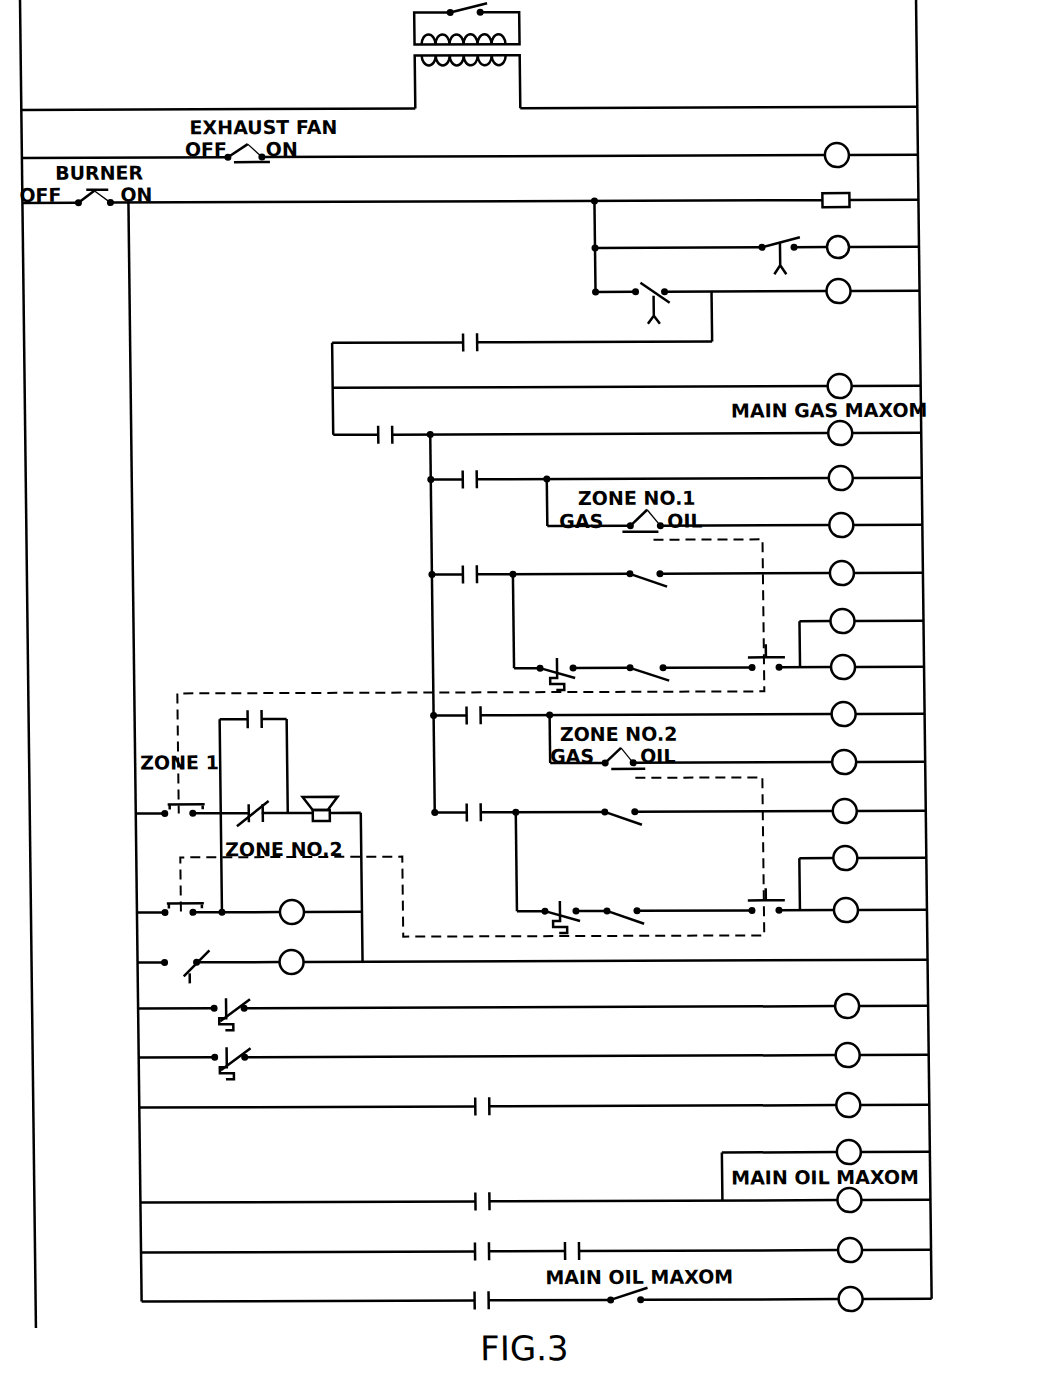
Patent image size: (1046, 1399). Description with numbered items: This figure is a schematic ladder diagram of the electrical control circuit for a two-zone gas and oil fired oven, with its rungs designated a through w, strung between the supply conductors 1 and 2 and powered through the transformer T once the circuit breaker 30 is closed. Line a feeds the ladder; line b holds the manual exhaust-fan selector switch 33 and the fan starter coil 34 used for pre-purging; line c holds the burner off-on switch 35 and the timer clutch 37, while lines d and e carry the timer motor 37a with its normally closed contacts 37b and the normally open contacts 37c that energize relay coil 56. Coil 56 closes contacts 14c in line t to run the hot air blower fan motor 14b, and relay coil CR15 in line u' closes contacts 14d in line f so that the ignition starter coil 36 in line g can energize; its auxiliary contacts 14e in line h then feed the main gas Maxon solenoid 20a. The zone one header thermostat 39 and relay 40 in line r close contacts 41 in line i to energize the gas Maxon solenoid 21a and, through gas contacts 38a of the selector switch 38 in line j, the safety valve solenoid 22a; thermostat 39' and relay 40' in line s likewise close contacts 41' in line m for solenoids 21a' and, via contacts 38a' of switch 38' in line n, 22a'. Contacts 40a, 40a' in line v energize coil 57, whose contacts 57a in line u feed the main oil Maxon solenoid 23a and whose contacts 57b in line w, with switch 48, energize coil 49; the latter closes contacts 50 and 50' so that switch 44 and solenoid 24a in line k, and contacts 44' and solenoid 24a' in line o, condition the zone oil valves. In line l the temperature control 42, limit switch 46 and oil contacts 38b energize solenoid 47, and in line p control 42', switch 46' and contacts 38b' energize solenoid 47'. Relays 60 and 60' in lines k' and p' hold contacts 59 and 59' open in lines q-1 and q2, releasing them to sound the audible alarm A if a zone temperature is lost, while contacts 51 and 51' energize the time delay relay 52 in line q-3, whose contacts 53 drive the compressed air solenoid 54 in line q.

The oven chamber 1 is at (20, 32).
The power supply line 2 is at (916, 14).
The circuit breaker 30 is at (420, 8).
The power transmitting transformer T is at (519, 58).
The off-on selector switch 33 is at (246, 165).
The starter coil 34 is at (844, 150).
The burner off-on switch 35 is at (90, 208).
The coil operated timer clutch 37 is at (846, 198).
The timer motor 37a is at (845, 242).
The normally closed timer contacts 37b is at (776, 246).
The normally open timer contacts 37c is at (650, 291).
The relay coil 56 is at (844, 286).
The relay contacts 14d is at (466, 328).
The ignition starter coil 36 is at (844, 381).
The main gas Maxon solenoid coil 20a is at (842, 446).
The ignition auxiliary contacts 14e is at (380, 432).
The relay contacts 41 is at (458, 464).
The zone gas Maxon valve solenoid 21a is at (869, 473).
The zone fuel selector switch 38 is at (584, 526).
The gas contacts 38a is at (614, 553).
The safety gas valve solenoid 22a is at (868, 519).
The relay contacts 50 is at (458, 559).
The zone oil Maxon valve solenoid 24a is at (869, 566).
The switch 44 is at (629, 593).
The relay 60 is at (864, 614).
The limit switch 46 is at (647, 656).
The oil contacts 38b is at (748, 640).
The solenoid 47 is at (865, 659).
The zone temperature activated control 42 is at (518, 674).
The zone two gas Maxon valve solenoid 21a' is at (872, 708).
The normally closed contacts 59 is at (261, 805).
The circuit line q-1 is at (279, 748).
The relay contacts 41' is at (458, 735).
The zone two selector switch 38' is at (588, 772).
The zone two safety gas valve solenoid 22a' is at (872, 755).
The normally closed contacts 59' is at (249, 797).
The audible alarm A is at (316, 797).
The circuit line q2 is at (330, 812).
The selector switch contacts 51 is at (187, 796).
The gas contacts 38a' is at (654, 792).
The zone two oil Maxon valve solenoid 24a' is at (872, 803).
The relay contacts 50' is at (458, 831).
The contacts 44' is at (601, 831).
The relay 60' is at (868, 853).
The oil contacts 38b' is at (745, 885).
The limit switch 46' is at (630, 898).
The solenoid 47' is at (866, 901).
The zone temperature activated control 42' is at (520, 916).
The selector switch contacts 51' is at (172, 893).
The time delay relay 52 is at (272, 903).
The circuit line q-3 is at (318, 898).
The normally open contacts 53 is at (174, 962).
The solenoid 54 is at (270, 954).
The temperature indicating and controlling instrument 39 is at (240, 1003).
The relay 40 is at (867, 1001).
The thermostat 39' is at (251, 1053).
The relay 40' is at (870, 1049).
The relay contacts 14c is at (468, 1104).
The hot air blower fan motor 14b is at (843, 1100).
The relay coil CR15 is at (853, 1139).
The relay contacts 57a is at (466, 1198).
The main oil Maxon valve solenoid 23a is at (842, 1213).
The relay contacts 40a is at (452, 1237).
The relay contacts 40a' is at (602, 1237).
The relay coil 57 is at (842, 1263).
The relay contacts 57b is at (460, 1295).
The switch 48 is at (616, 1298).
The coil 49 is at (842, 1312).
The circuit line a is at (620, 108).
The circuit line b is at (626, 162).
The circuit line c is at (626, 207).
The circuit line d is at (626, 254).
The circuit line e is at (620, 294).
The circuit line f is at (616, 344).
The circuit line g is at (620, 389).
The circuit line h is at (622, 436).
The circuit line i is at (626, 482).
The circuit line j is at (736, 526).
The circuit line k is at (677, 561).
The circuit line k' is at (858, 625).
The circuit line l is at (702, 670).
The circuit line m is at (704, 706).
The circuit line n is at (710, 754).
The circuit line o is at (710, 816).
The circuit line p is at (722, 893).
The circuit line p' is at (861, 870).
The circuit line q is at (714, 962).
The circuit line r is at (724, 1010).
The circuit line s is at (724, 1058).
The circuit line t is at (724, 1108).
The circuit line u is at (535, 1185).
The circuit line u' is at (825, 1160).
The circuit line v is at (688, 1252).
The circuit line w is at (762, 1300).